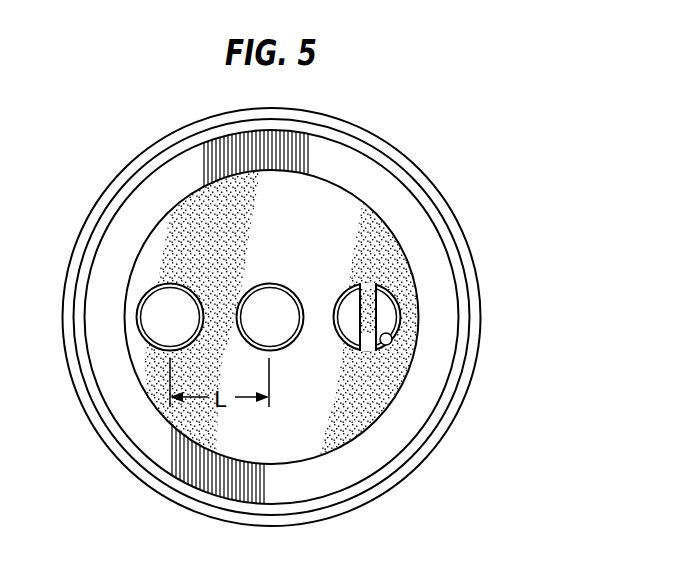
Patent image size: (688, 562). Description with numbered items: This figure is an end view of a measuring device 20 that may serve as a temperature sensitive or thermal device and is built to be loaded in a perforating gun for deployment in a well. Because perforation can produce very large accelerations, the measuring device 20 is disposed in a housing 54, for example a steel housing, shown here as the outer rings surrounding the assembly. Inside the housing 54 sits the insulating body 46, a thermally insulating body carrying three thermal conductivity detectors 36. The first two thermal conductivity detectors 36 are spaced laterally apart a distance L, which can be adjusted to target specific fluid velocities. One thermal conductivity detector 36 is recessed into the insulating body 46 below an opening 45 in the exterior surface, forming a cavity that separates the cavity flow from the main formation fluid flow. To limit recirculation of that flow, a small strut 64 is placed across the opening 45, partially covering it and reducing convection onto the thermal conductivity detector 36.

The measuring device 20 is at (123, 138).
The housing 54 is at (402, 153).
The insulating body 46 is at (309, 247).
The thermal conductivity detector 36 is at (184, 330).
The strut 64 is at (370, 310).
The opening 45 is at (385, 348).